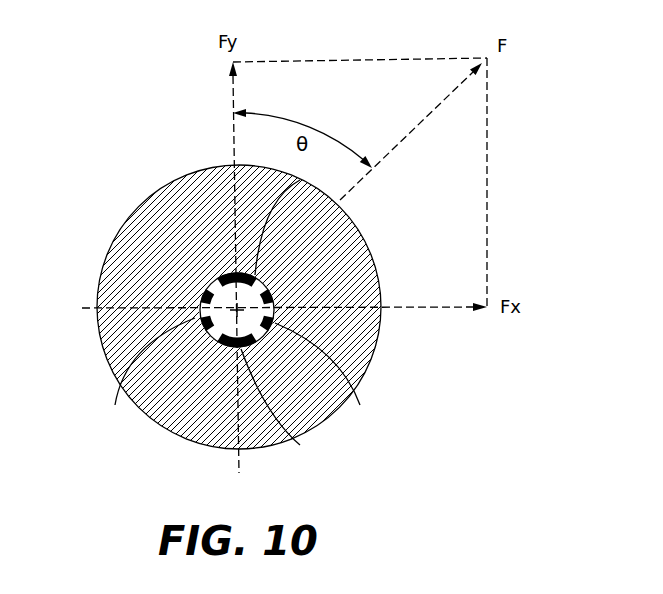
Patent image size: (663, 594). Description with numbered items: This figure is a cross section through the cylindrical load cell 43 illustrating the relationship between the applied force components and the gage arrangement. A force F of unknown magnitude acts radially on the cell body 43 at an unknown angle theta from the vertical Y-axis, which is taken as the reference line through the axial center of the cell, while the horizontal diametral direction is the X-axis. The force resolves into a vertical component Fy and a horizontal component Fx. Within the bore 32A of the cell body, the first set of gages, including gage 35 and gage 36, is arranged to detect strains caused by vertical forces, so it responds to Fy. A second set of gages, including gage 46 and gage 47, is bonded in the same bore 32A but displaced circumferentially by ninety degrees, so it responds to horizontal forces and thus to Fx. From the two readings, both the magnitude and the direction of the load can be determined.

The cylindrical load cell 43 is at (98, 288).
The bore 32A is at (213, 287).
The gage 47 is at (300, 180).
The gage 46 is at (300, 445).
The gage 35 is at (360, 405).
The gage 36 is at (115, 405).